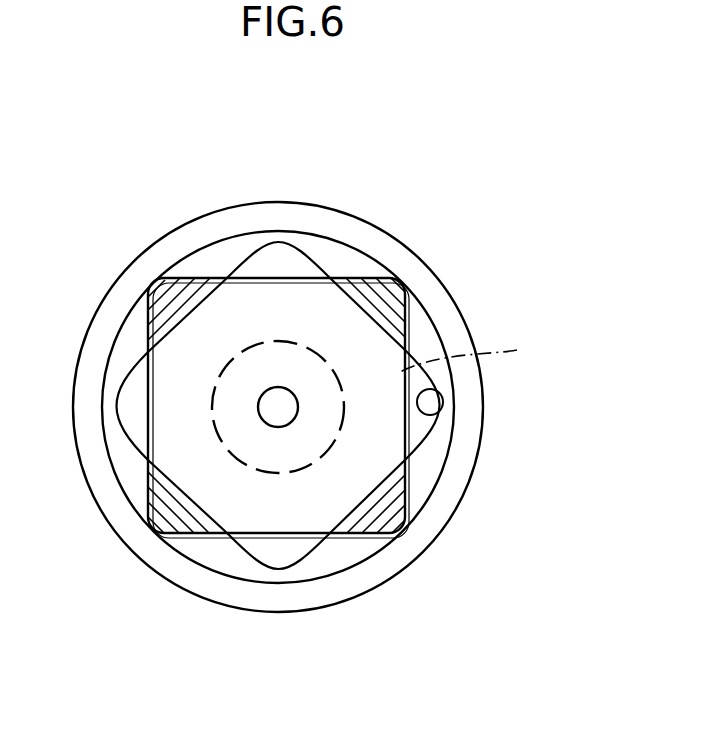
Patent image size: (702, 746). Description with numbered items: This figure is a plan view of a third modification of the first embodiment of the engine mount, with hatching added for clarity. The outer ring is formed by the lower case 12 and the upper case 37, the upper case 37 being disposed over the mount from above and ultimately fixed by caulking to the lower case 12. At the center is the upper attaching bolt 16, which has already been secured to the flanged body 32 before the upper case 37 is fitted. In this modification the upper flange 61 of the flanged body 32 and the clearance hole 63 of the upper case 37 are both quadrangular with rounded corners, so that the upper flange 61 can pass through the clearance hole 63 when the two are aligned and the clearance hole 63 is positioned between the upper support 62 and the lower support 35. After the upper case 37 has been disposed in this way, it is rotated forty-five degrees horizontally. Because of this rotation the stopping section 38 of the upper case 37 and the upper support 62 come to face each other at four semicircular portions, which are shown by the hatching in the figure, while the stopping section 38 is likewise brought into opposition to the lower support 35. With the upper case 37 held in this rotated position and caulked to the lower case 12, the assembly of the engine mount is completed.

The lower case 12 is at (378, 575).
The upper attaching bolt 16 is at (284, 428).
The flanged body 32 is at (283, 330).
The lower support 35 is at (278, 248).
The upper case 37 is at (360, 247).
The stopping section 38 is at (366, 268).
The upper flange 61 is at (400, 515).
The upper support 62 is at (388, 490).
The clearance hole 63 is at (437, 389).